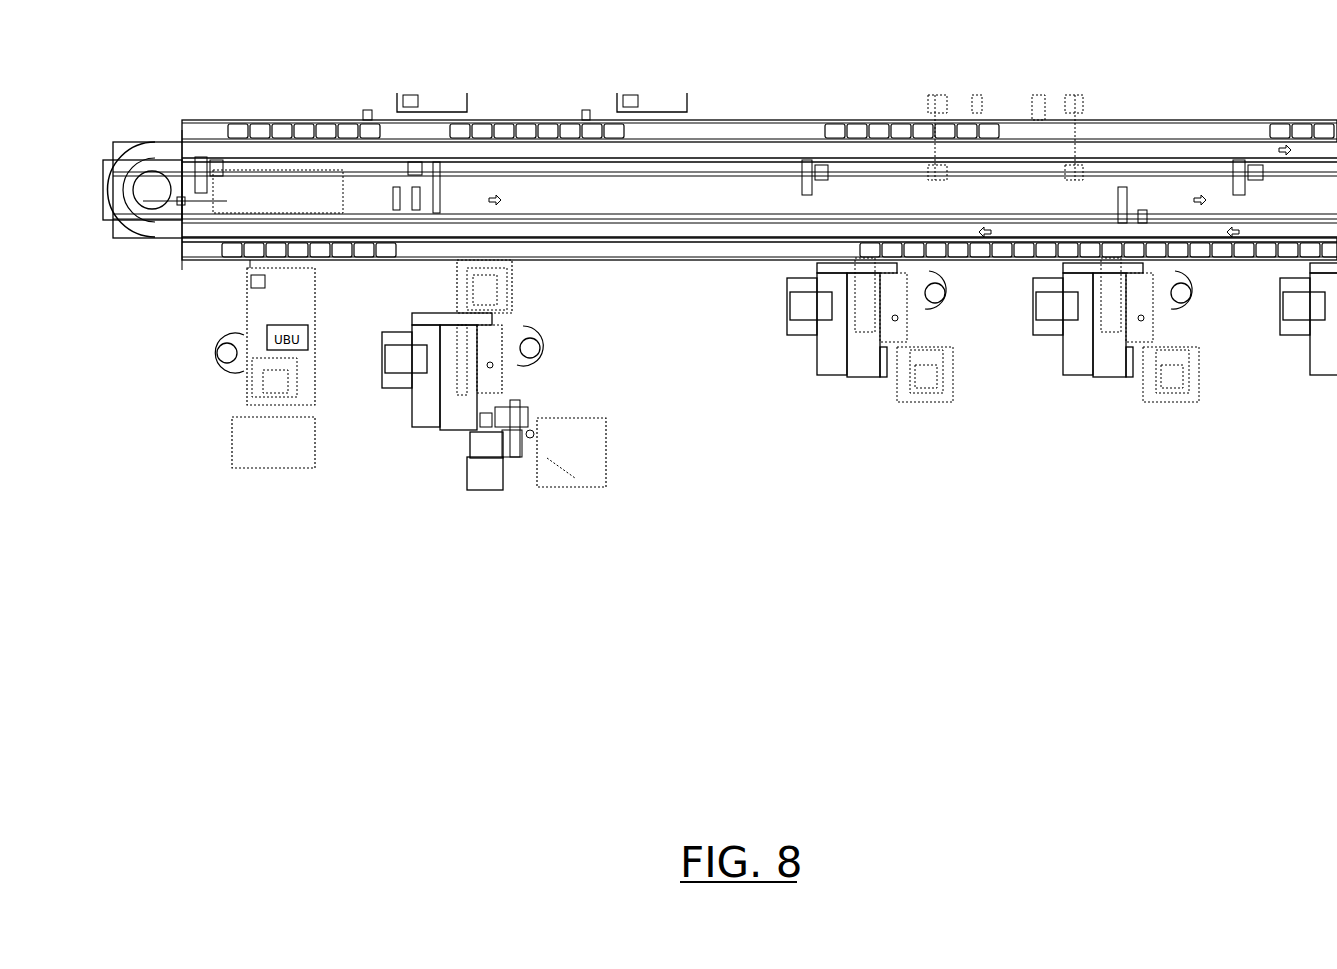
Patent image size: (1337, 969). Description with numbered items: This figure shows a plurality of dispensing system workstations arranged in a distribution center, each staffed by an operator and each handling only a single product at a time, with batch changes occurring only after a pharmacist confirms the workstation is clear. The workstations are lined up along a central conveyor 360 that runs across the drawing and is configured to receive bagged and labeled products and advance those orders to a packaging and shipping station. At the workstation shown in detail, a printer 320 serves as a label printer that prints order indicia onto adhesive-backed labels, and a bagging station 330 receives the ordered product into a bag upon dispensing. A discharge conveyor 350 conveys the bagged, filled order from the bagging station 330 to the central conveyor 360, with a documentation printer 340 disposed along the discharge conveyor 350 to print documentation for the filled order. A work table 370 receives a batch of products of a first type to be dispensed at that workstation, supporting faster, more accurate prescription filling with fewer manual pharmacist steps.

The printer 320 is at (470, 490).
The bagging station 330 is at (410, 427).
The documentation printer 340 is at (510, 283).
The discharge conveyor 350 is at (497, 238).
The central conveyor 360 is at (683, 190).
The work table 370 is at (606, 453).